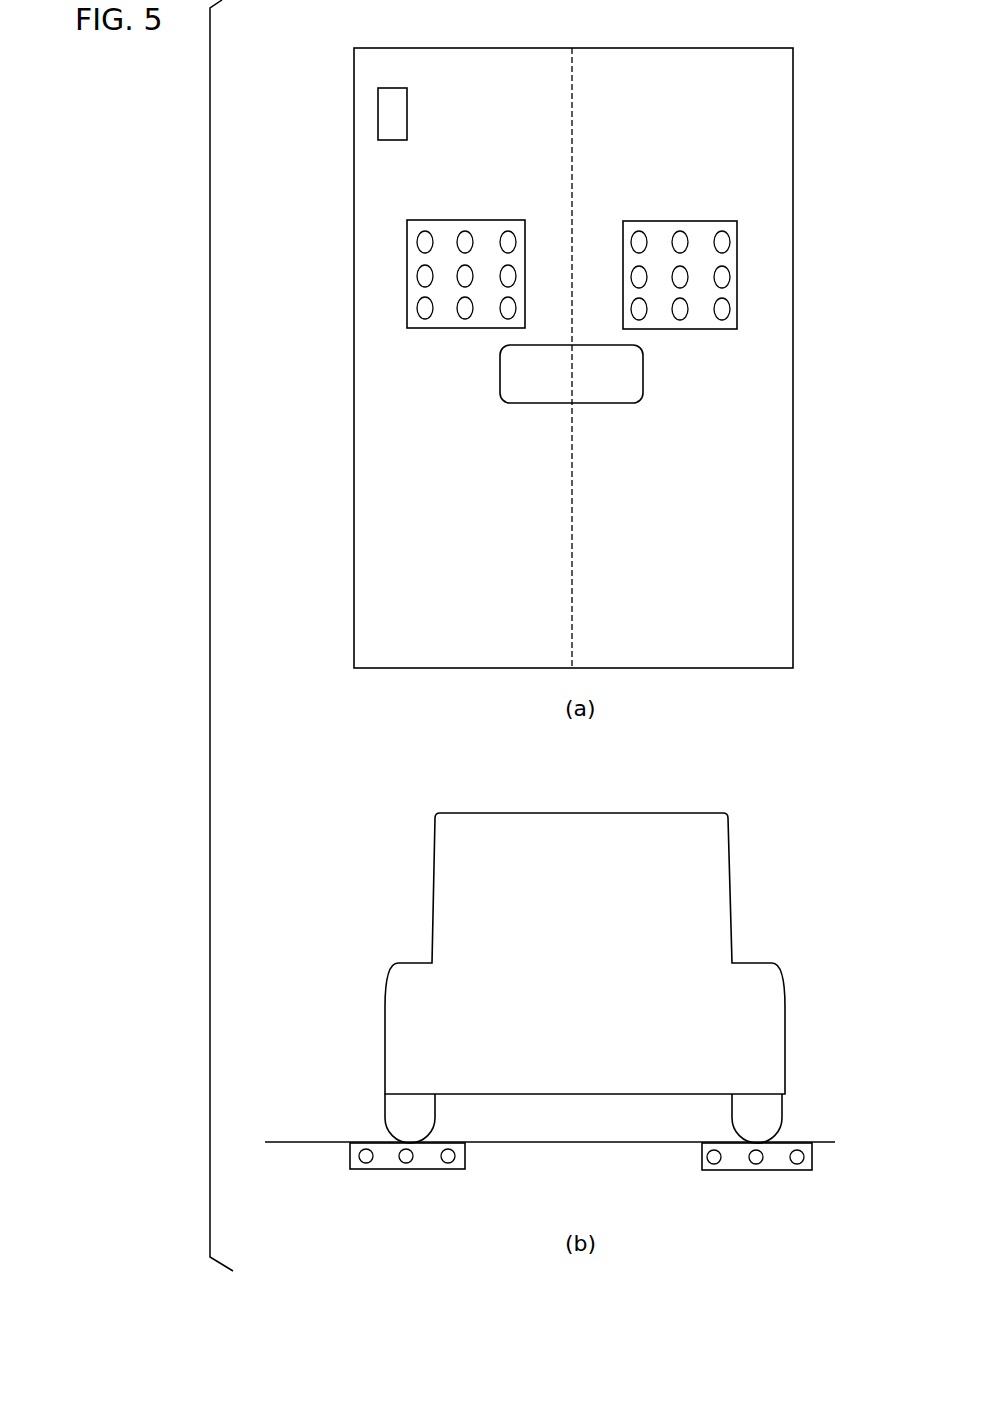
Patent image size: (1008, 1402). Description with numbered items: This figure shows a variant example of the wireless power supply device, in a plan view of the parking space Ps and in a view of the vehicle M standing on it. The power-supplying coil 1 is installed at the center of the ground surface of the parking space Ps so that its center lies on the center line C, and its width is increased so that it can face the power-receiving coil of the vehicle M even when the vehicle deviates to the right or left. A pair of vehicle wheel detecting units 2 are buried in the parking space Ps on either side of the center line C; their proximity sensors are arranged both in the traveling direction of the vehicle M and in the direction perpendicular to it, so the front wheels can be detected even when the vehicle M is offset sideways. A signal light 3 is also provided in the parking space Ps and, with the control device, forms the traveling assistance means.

The power-supplying coil 1 is at (500, 371).
The vehicle wheel detecting unit 2 is at (465, 220).
The signal light 3 is at (407, 116).
The center line C is at (572, 118).
The parking space Ps is at (793, 144).
The vehicle M is at (432, 885).